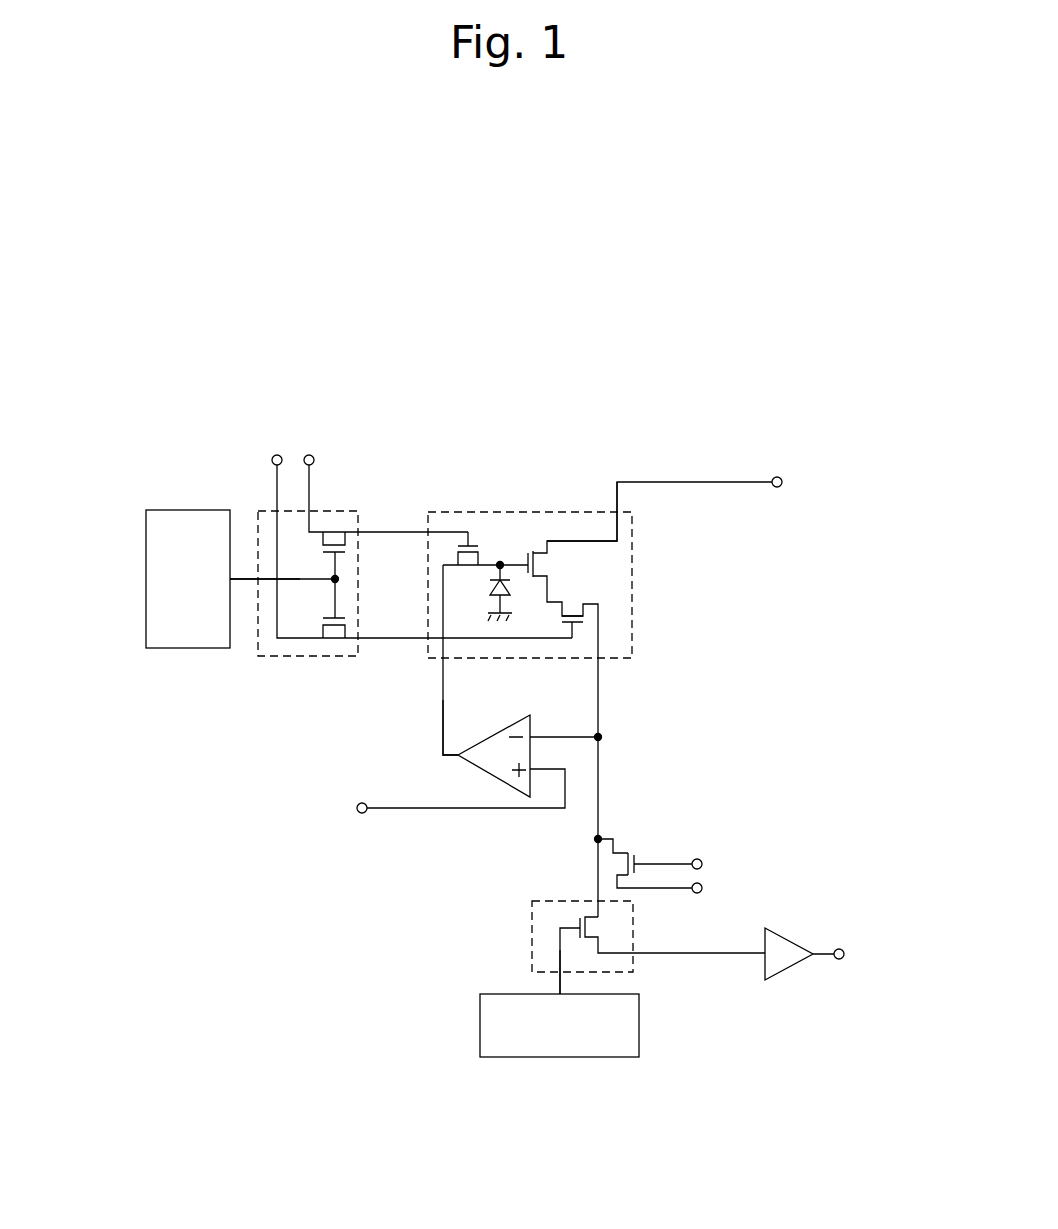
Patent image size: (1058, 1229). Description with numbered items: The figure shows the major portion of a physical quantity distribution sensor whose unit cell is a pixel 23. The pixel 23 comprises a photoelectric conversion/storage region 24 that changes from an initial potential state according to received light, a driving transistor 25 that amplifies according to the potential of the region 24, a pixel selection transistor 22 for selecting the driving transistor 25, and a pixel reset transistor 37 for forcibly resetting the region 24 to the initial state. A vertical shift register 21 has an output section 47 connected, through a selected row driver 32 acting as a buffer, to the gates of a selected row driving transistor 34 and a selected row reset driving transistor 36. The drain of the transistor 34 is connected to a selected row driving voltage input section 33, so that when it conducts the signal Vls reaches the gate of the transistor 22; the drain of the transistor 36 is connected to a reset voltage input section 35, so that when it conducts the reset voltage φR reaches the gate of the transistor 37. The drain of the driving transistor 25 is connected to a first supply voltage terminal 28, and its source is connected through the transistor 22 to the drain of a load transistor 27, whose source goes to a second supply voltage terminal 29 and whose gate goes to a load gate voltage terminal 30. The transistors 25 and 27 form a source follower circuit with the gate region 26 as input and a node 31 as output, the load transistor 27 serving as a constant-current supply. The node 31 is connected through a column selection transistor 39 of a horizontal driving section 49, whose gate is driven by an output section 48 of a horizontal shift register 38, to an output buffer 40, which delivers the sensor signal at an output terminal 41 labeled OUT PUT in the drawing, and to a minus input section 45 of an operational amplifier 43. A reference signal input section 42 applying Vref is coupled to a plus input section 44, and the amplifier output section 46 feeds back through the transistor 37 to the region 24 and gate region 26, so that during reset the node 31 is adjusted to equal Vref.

The vertical shift register 21 is at (146, 512).
The pixel selection transistor 22 is at (585, 625).
The pixel 23 is at (633, 596).
The photoelectric conversion/storage region 24 is at (487, 588).
The driving transistor 25 is at (547, 565).
The gate region 26 is at (527, 560).
The load transistor 27 is at (632, 850).
The first supply voltage terminal 28 is at (780, 487).
The second supply voltage terminal 29 is at (707, 885).
The load gate voltage terminal 30 is at (703, 858).
The node 31 is at (603, 737).
The selected row driver 32 is at (278, 658).
The selected row driving voltage input section 33 is at (272, 457).
The selected row driving transistor 34 is at (333, 640).
The reset voltage input section 35 is at (314, 457).
The selected row reset driving transistor 36 is at (333, 535).
The pixel reset transistor 37 is at (460, 547).
The horizontal shift register 38 is at (640, 1030).
The column selection transistor 39 is at (592, 925).
The output buffer 40 is at (778, 933).
The output terminal 41 is at (845, 948).
The reference signal input section 42 is at (359, 814).
The operational amplifier 43 is at (490, 773).
The plus input section 44 is at (545, 772).
The minus input section 45 is at (555, 735).
The output section 46 is at (452, 752).
The output section 47 is at (245, 578).
The output section 48 is at (558, 985).
The horizontal driving section 49 is at (532, 935).